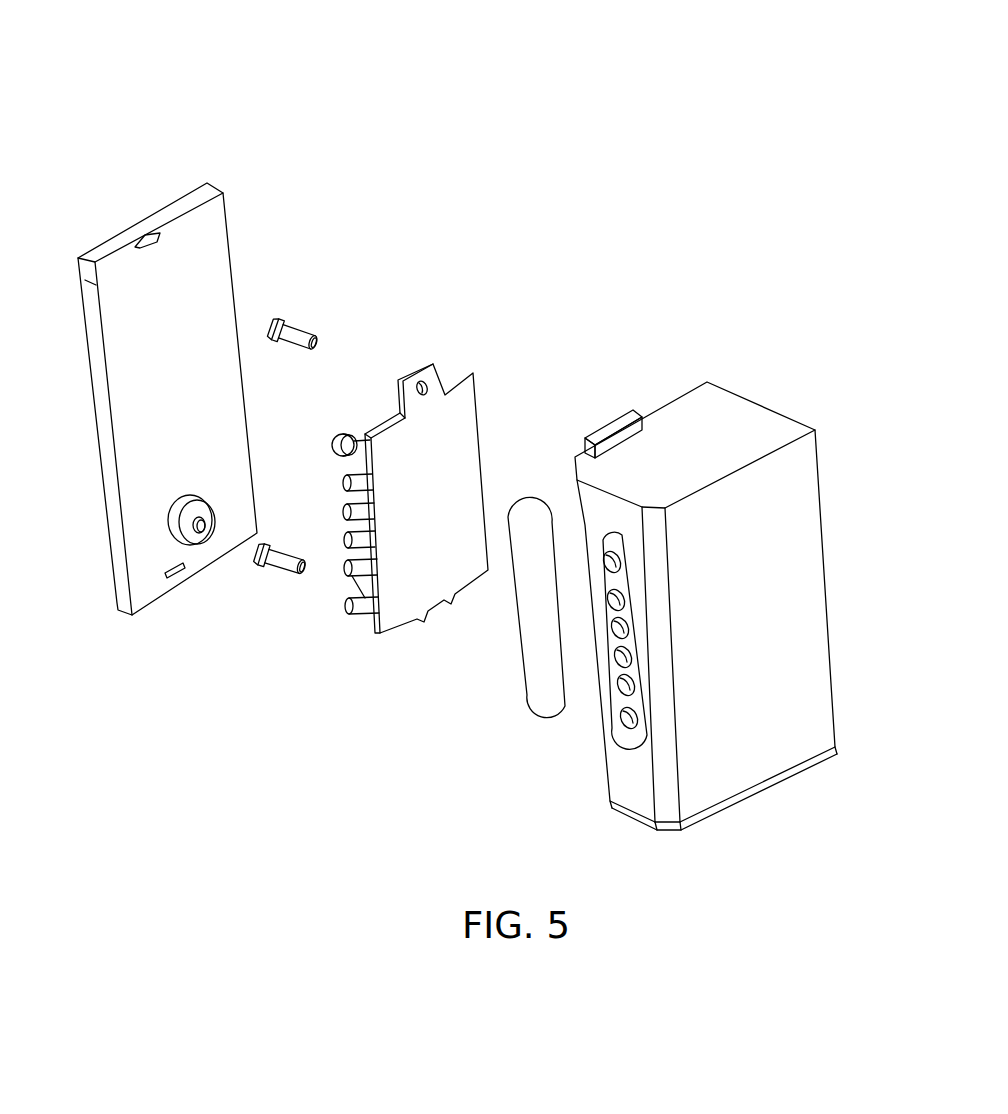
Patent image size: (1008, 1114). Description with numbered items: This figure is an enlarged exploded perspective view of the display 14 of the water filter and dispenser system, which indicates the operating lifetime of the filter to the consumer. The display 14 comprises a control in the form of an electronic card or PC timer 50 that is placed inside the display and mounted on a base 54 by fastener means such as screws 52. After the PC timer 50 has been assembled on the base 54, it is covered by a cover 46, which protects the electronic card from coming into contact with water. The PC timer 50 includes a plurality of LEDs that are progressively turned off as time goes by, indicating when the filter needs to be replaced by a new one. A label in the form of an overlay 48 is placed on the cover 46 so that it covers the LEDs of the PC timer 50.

The display 14 is at (712, 109).
The cover 46 is at (698, 410).
The overlay 48 is at (540, 697).
The PC timer 50 is at (468, 388).
The screws 52 is at (305, 323).
The base 54 is at (152, 550).